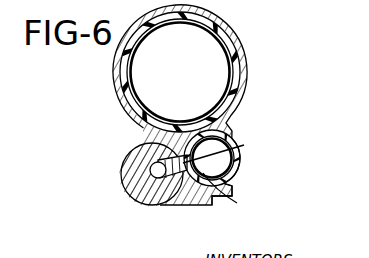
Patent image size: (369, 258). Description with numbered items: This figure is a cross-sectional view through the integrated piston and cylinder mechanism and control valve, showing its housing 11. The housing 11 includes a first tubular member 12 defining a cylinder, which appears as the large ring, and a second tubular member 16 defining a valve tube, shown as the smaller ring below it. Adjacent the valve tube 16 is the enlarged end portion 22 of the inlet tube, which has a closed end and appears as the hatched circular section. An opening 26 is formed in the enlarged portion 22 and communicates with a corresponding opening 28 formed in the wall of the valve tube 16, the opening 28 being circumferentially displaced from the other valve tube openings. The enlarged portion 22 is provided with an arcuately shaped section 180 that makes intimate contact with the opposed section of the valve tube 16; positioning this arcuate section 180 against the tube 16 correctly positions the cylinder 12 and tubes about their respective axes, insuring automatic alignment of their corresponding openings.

The housing 11 is at (110, 94).
The first tubular member 12 is at (243, 64).
The second tubular member 16 is at (241, 174).
The enlarged end portion 22 is at (132, 175).
The opening 26 is at (174, 174).
The opening 28 is at (244, 145).
The arcuately shaped section 180 is at (229, 194).